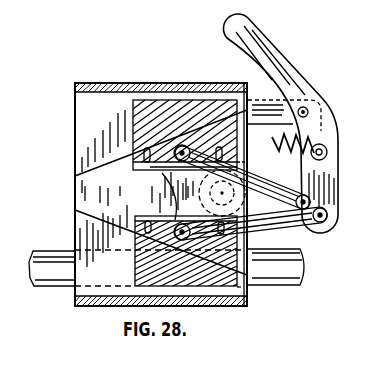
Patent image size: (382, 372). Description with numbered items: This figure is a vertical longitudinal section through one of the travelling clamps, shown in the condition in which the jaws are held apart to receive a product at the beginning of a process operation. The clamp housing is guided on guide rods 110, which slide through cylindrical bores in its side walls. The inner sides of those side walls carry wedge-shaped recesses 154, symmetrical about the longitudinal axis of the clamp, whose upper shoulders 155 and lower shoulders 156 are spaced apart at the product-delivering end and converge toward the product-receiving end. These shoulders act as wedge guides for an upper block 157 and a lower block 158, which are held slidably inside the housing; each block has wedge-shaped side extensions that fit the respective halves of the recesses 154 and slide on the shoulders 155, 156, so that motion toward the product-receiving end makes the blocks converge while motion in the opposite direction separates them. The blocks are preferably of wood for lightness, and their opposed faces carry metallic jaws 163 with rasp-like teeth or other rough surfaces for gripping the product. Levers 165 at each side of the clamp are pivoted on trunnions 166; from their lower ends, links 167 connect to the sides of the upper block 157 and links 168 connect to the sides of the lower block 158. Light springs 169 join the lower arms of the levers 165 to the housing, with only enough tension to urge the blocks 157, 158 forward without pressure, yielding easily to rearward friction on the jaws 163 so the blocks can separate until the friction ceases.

The guide rods 110 is at (271, 286).
The wedge-shaped recesses 154 is at (75, 191).
The upper shoulders 155 is at (104, 161).
The lower shoulders 156 is at (115, 230).
The upper block 157 is at (150, 103).
The lower block 158 is at (217, 284).
The metallic jaws 163 is at (160, 167).
The levers 165 is at (226, 34).
The trunnions 166 is at (307, 111).
The links 167 is at (288, 186).
The links 168 is at (298, 229).
The light springs 169 is at (310, 141).